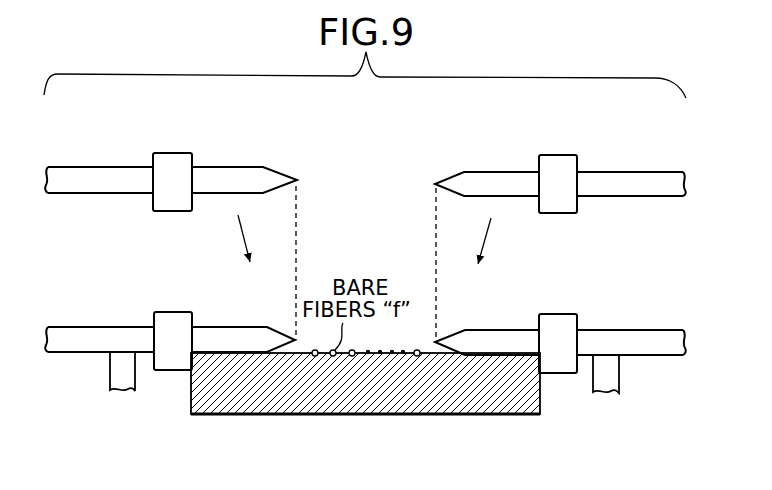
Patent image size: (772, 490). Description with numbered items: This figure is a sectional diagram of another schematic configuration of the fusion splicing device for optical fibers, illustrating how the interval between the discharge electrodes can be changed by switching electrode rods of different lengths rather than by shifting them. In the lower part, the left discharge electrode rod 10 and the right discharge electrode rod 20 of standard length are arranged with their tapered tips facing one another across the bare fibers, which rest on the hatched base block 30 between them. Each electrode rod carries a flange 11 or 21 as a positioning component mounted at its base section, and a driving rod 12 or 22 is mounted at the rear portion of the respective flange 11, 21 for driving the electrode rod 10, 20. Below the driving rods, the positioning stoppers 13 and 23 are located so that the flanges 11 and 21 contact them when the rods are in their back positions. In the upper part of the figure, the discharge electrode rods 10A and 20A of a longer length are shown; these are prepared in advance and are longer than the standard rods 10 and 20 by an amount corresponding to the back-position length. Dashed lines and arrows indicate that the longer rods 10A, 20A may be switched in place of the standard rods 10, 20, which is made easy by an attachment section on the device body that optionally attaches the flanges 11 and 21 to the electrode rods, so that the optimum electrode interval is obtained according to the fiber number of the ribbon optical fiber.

The discharge electrode rod 10 is at (221, 326).
The discharge electrode rod of longer length 10A is at (220, 166).
The flange 11 is at (172, 152).
The driving rod 12 is at (90, 166).
The positioning stopper 13 is at (110, 372).
The discharge electrode rod 20 is at (513, 329).
The discharge electrode rod of longer length 20A is at (515, 171).
The flange 21 is at (555, 155).
The driving rod 22 is at (645, 171).
The positioning stopper 23 is at (620, 382).
The substrate / base block 30 is at (373, 417).